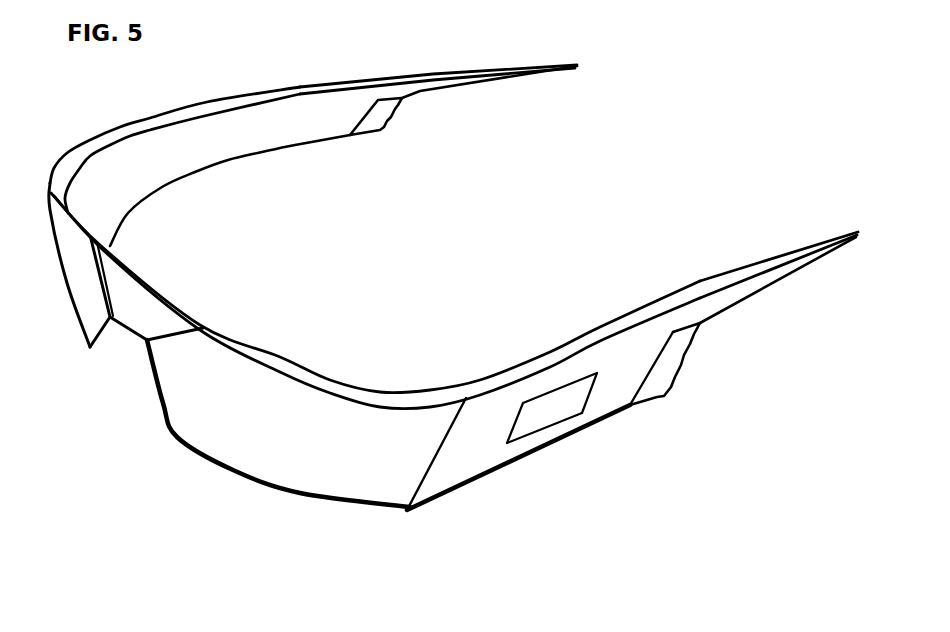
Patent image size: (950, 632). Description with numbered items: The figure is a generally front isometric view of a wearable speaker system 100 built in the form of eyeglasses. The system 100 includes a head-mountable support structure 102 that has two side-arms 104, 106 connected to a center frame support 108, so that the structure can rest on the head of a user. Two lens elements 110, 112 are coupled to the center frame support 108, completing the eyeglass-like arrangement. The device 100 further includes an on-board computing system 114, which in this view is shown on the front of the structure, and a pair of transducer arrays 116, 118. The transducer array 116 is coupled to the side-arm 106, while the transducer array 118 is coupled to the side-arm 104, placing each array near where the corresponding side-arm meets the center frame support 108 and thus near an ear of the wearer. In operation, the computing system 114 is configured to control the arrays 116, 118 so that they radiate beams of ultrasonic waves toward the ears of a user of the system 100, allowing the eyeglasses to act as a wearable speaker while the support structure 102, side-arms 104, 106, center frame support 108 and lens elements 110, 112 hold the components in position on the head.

The wearable speaker system 100 is at (152, 508).
The head-mountable support structure 102 is at (301, 352).
The side-arm 104 is at (263, 93).
The side-arm 106 is at (795, 245).
The center frame support 108 is at (233, 330).
The lens element 110 is at (80, 290).
The lens element 112 is at (313, 475).
The on-board computing system 114 is at (552, 427).
The transducer array 116 is at (653, 400).
The transducer array 118 is at (371, 136).